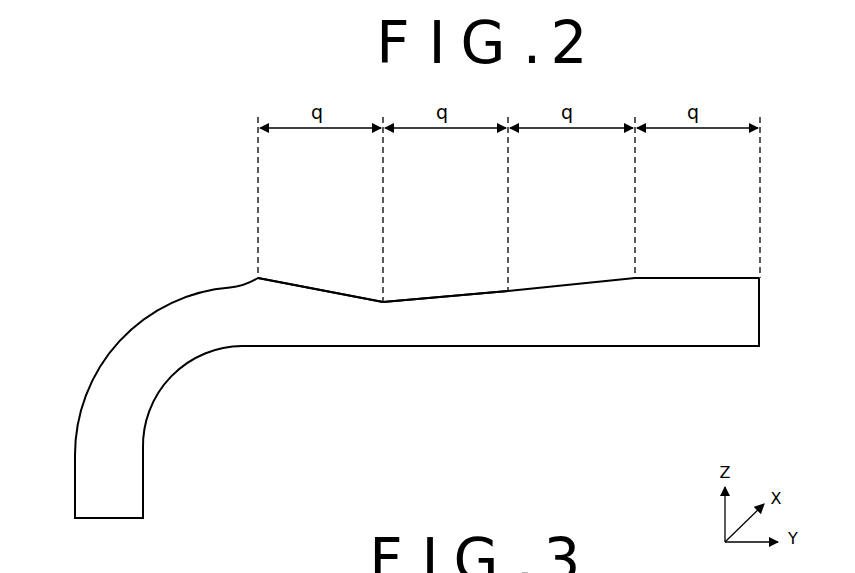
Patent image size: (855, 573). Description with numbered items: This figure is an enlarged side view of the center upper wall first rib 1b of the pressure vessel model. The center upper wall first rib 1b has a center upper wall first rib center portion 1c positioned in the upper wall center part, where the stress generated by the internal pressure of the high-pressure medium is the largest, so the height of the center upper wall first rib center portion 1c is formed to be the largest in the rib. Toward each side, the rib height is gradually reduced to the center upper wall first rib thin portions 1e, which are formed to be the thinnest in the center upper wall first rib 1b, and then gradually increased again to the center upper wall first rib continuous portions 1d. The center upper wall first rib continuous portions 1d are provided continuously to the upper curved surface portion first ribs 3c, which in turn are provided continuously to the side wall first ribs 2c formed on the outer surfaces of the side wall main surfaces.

The center upper wall first rib 1b is at (575, 280).
The center upper wall first rib center portion 1c is at (748, 305).
The center upper wall first rib continuous portions 1d is at (316, 316).
The center upper wall first rib thin portions 1e is at (388, 318).
The side wall first ribs 2c is at (107, 497).
The upper curved surface portion first ribs 3c is at (178, 330).